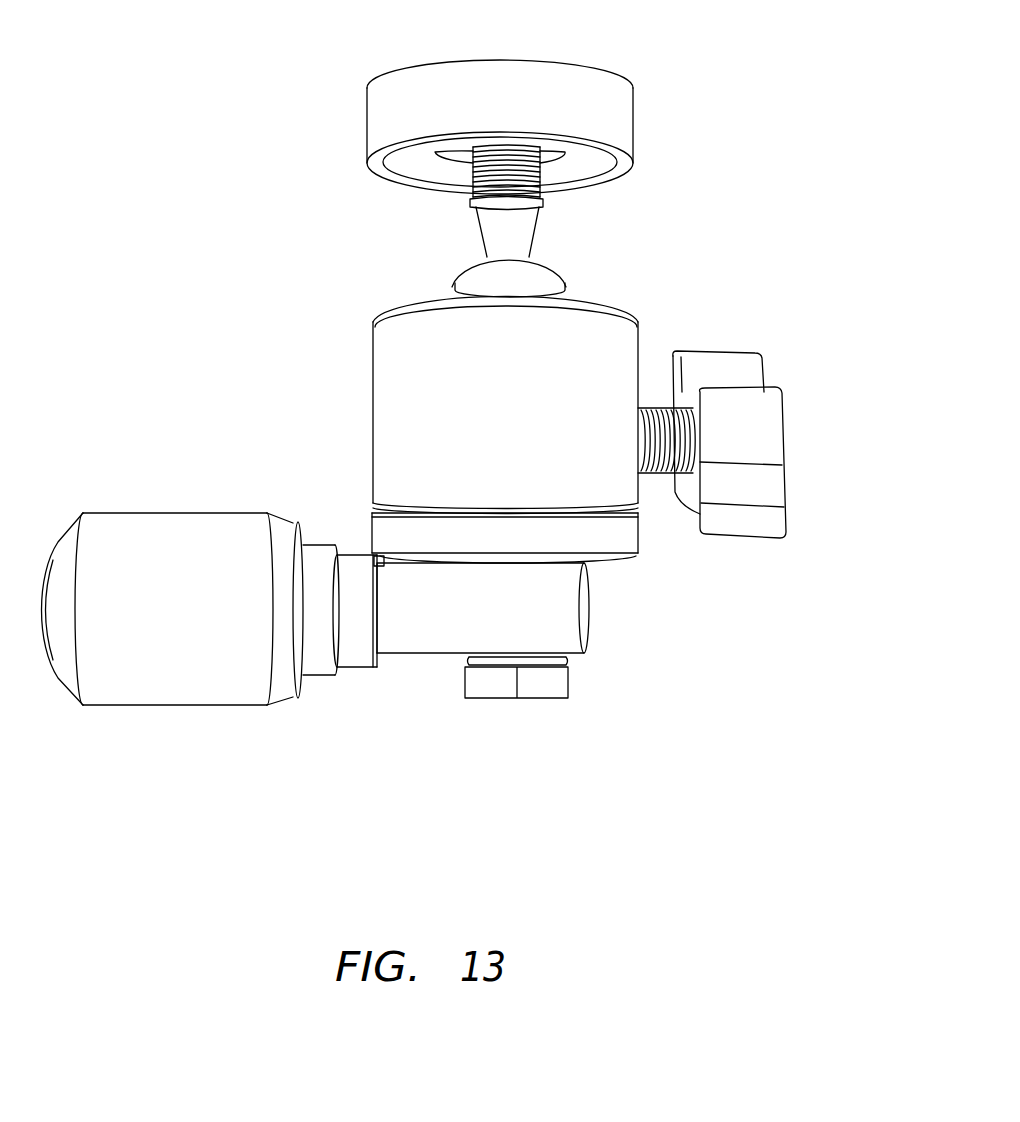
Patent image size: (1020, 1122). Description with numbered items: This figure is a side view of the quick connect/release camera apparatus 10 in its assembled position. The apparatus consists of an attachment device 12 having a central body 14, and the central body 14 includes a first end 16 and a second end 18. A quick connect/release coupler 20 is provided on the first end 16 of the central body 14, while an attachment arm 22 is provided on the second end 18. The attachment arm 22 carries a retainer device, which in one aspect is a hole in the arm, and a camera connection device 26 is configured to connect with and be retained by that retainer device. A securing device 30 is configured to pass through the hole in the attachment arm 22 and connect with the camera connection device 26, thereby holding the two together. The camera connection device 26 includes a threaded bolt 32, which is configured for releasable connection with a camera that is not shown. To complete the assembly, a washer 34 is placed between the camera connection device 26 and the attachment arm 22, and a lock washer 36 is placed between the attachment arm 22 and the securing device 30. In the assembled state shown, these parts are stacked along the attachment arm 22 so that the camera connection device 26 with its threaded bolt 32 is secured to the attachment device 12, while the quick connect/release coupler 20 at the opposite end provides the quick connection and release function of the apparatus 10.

The quick connect/release camera apparatus 10 is at (822, 374).
The attachment device 12 is at (211, 617).
The central body 14 is at (336, 636).
The first end 16 is at (168, 598).
The second end 18 is at (519, 650).
The quick connect/release coupler 20 is at (156, 680).
The attachment arm 22 is at (408, 654).
The camera connection device 26 is at (638, 322).
The securing device 30 is at (500, 699).
The threaded bolt 32 is at (540, 172).
The washer 34 is at (630, 562).
The lock washer 36 is at (568, 660).